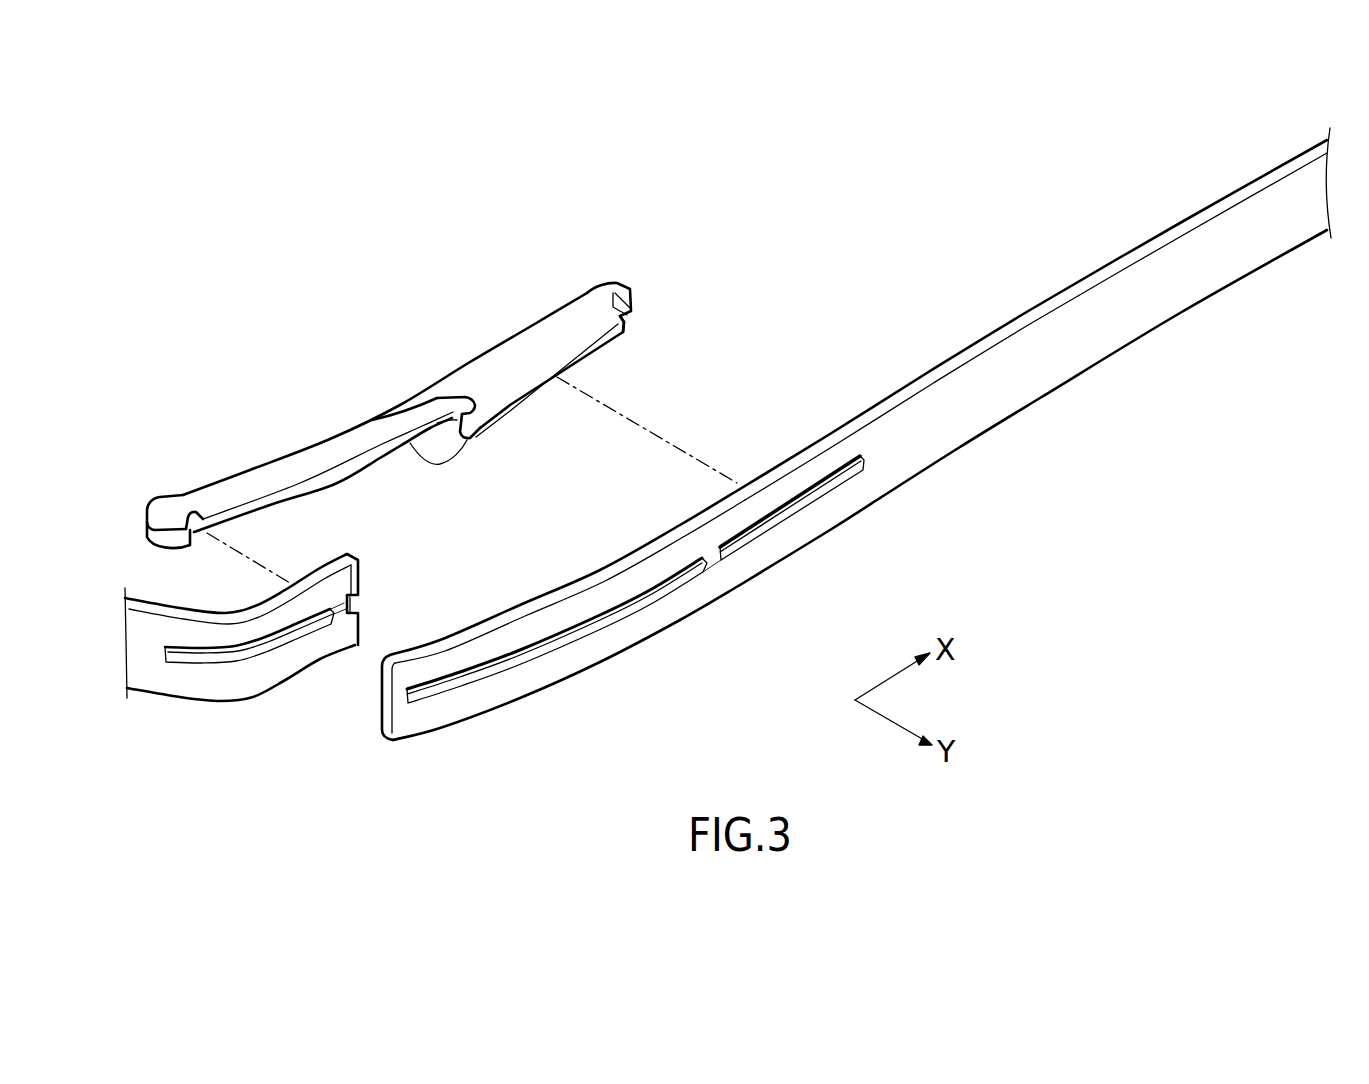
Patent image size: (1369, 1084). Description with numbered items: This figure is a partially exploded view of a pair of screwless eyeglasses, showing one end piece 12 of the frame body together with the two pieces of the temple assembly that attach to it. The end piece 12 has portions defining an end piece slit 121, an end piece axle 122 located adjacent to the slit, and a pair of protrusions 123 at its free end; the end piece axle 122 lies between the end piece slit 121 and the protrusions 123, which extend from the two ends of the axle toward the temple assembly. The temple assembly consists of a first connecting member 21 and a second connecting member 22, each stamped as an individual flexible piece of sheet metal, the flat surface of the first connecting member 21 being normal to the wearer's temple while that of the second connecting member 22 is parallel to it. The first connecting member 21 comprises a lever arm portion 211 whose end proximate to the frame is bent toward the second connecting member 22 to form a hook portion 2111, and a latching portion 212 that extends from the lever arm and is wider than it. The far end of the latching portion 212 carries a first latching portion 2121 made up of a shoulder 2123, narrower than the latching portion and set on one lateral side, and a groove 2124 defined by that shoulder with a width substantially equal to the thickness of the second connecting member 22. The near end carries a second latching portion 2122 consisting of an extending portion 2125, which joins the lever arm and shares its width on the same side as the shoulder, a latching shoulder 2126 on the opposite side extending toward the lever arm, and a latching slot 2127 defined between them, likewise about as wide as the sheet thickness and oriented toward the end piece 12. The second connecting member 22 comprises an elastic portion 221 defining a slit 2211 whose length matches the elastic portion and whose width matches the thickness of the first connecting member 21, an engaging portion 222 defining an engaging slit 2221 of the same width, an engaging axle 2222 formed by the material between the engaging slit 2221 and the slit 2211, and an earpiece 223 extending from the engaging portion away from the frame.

The end piece 12 is at (177, 685).
The end piece slit 121 is at (250, 657).
The end piece axle 122 is at (337, 612).
The protrusions 123 is at (357, 627).
The first connecting member 21 is at (509, 293).
The lever arm portion 211 is at (253, 470).
The hook portion 2111 is at (178, 505).
The latching portion 212 is at (500, 370).
The first latching portion 2121 is at (717, 313).
The second latching portion 2122 is at (338, 388).
The shoulder 2123 is at (616, 292).
The groove 2124 is at (630, 318).
The extending portion 2125 is at (437, 397).
The latching shoulder 2126 is at (437, 463).
The latching slot 2127 is at (445, 418).
The second connecting member 22 is at (673, 647).
The elastic portion 221 is at (583, 660).
The slit 2211 is at (462, 684).
The engaging portion 222 is at (792, 527).
The engaging slit 2221 is at (843, 477).
The engaging axle 2222 is at (712, 560).
The earpiece 223 is at (1042, 363).